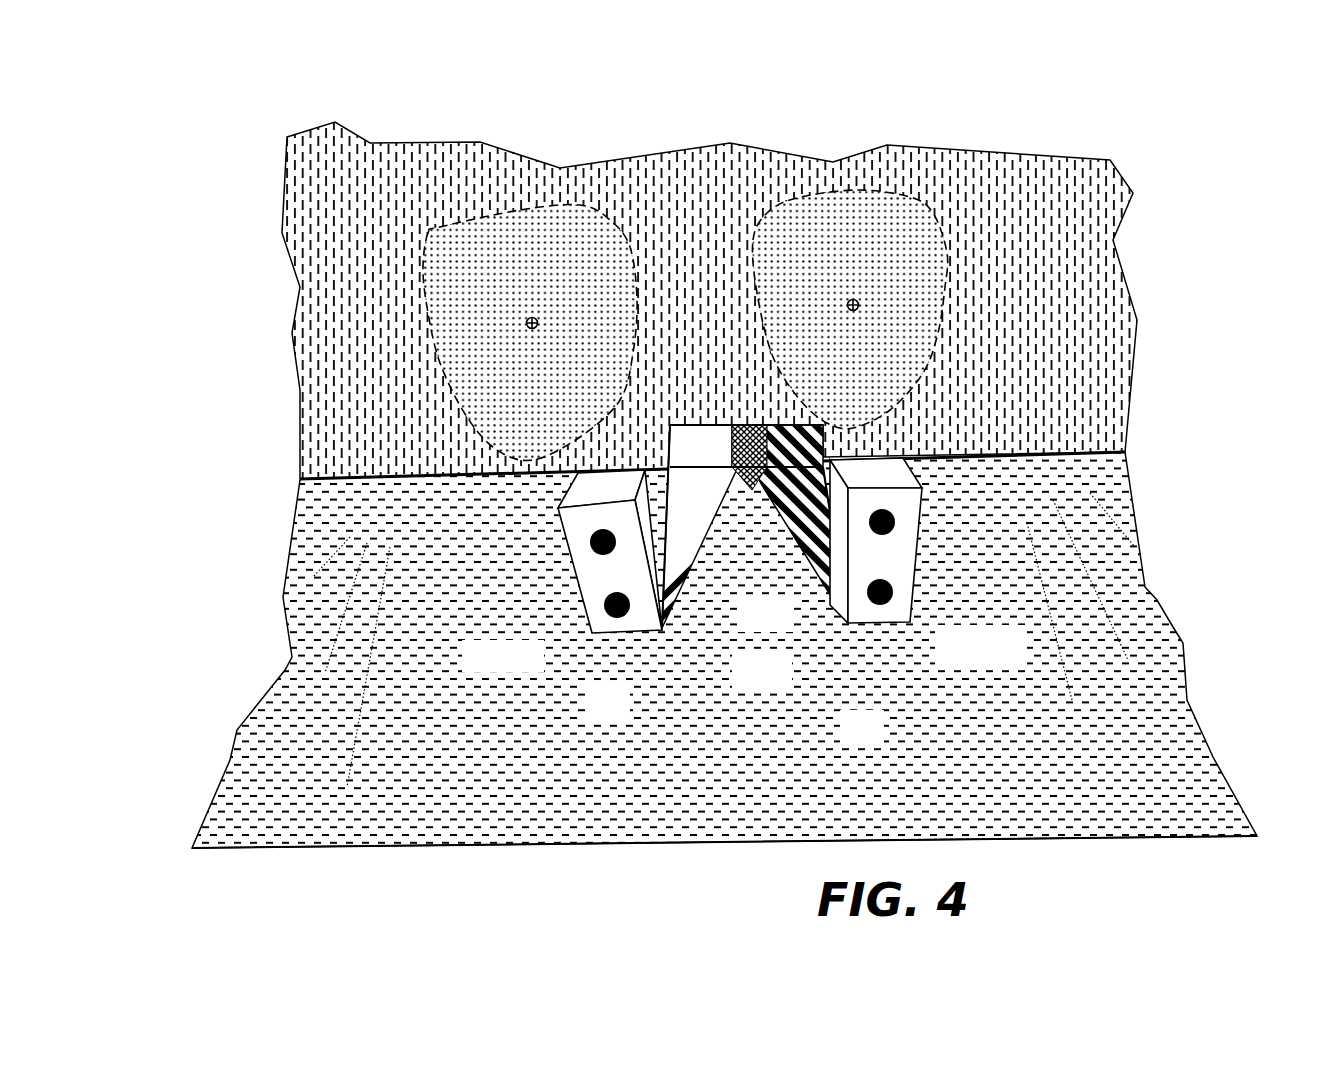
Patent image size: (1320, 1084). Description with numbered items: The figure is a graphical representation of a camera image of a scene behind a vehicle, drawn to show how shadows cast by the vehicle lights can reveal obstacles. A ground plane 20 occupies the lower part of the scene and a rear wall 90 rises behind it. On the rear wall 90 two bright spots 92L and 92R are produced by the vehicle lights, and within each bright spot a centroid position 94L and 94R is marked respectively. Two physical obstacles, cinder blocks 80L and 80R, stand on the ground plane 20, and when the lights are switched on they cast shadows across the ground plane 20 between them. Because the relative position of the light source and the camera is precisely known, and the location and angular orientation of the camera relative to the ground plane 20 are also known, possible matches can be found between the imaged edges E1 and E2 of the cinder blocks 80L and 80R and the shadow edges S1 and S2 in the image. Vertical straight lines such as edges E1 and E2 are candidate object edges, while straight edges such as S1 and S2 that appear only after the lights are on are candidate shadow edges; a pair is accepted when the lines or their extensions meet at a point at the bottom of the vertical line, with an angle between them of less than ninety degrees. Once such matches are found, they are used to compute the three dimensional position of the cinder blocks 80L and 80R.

The rear wall 90 is at (310, 340).
The ground plane 20 is at (295, 700).
The left bright spot 92L is at (618, 207).
The right bright spot 92R is at (945, 208).
The left centroid position 94L is at (577, 310).
The right centroid position 94R is at (890, 307).
The left cinder block 80L is at (580, 568).
The right cinder block 80R is at (855, 560).
The first shadow edge S1 is at (777, 527).
The second shadow edge S2 is at (703, 540).
The first object edge E1 is at (818, 585).
The second object edge E2 is at (660, 605).